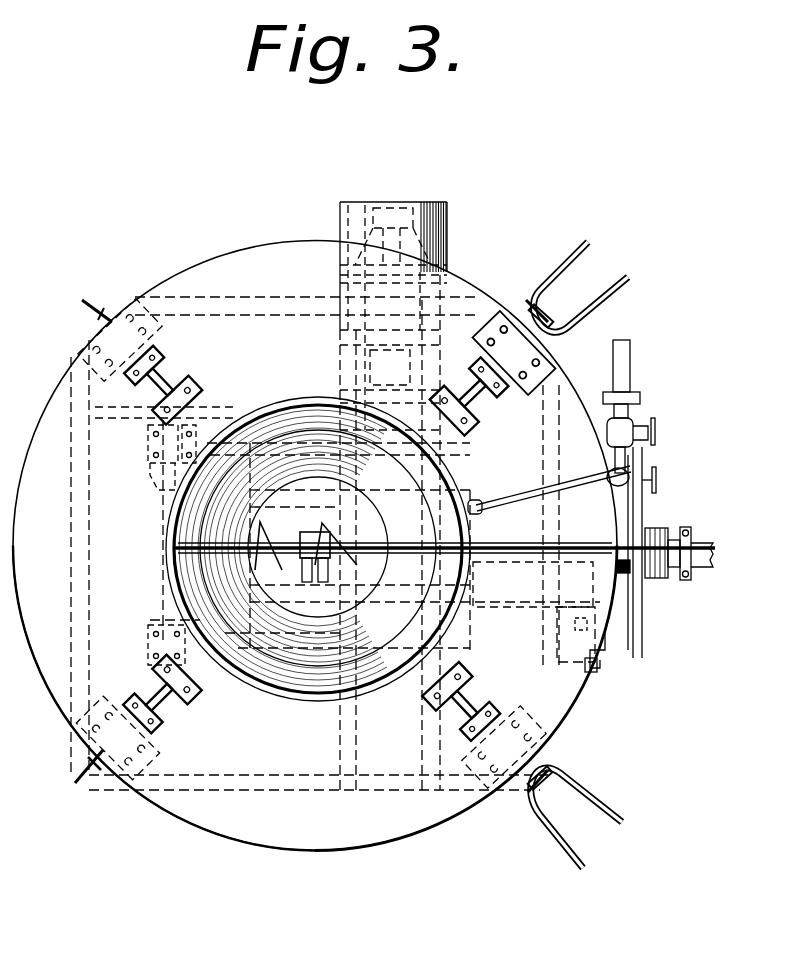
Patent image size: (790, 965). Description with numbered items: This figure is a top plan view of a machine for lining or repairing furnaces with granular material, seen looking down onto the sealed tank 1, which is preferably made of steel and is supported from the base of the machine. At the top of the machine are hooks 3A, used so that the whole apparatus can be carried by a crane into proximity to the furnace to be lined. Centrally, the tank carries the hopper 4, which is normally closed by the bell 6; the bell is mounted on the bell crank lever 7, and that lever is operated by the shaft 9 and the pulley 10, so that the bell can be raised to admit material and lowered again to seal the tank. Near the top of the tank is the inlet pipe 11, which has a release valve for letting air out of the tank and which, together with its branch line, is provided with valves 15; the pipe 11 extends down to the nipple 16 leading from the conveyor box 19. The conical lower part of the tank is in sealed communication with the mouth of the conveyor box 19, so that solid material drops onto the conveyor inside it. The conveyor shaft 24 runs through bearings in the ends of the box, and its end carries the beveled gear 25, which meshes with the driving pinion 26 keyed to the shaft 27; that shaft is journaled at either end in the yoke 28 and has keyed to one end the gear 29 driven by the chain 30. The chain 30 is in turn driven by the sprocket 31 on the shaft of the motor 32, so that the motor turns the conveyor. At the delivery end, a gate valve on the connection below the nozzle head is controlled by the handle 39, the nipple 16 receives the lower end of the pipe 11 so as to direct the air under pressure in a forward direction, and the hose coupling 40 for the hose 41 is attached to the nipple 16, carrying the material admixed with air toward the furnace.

The sealed tank 1 is at (315, 546).
The hooks 3A is at (155, 712).
The hopper 4 is at (320, 677).
The bell 6 is at (318, 547).
The bell crank lever 7 is at (306, 565).
The shaft 9 is at (445, 535).
The pulley 10 is at (643, 460).
The inlet pipe 11 is at (506, 500).
The valves 15 is at (645, 407).
The nipple 16 is at (618, 575).
The conveyor box 19 is at (512, 605).
The conveyor shaft 24 is at (307, 548).
The beveled gear 25 is at (168, 588).
The driving pinion 26 is at (150, 474).
The shaft 27 is at (180, 517).
The yoke 28 is at (205, 672).
The gear 29 is at (168, 378).
The chain 30 is at (210, 418).
The sprocket 31 is at (340, 395).
The motor 32 is at (342, 306).
The handle 39 is at (617, 638).
The hose coupling 40 is at (656, 532).
The hose 41 is at (703, 568).